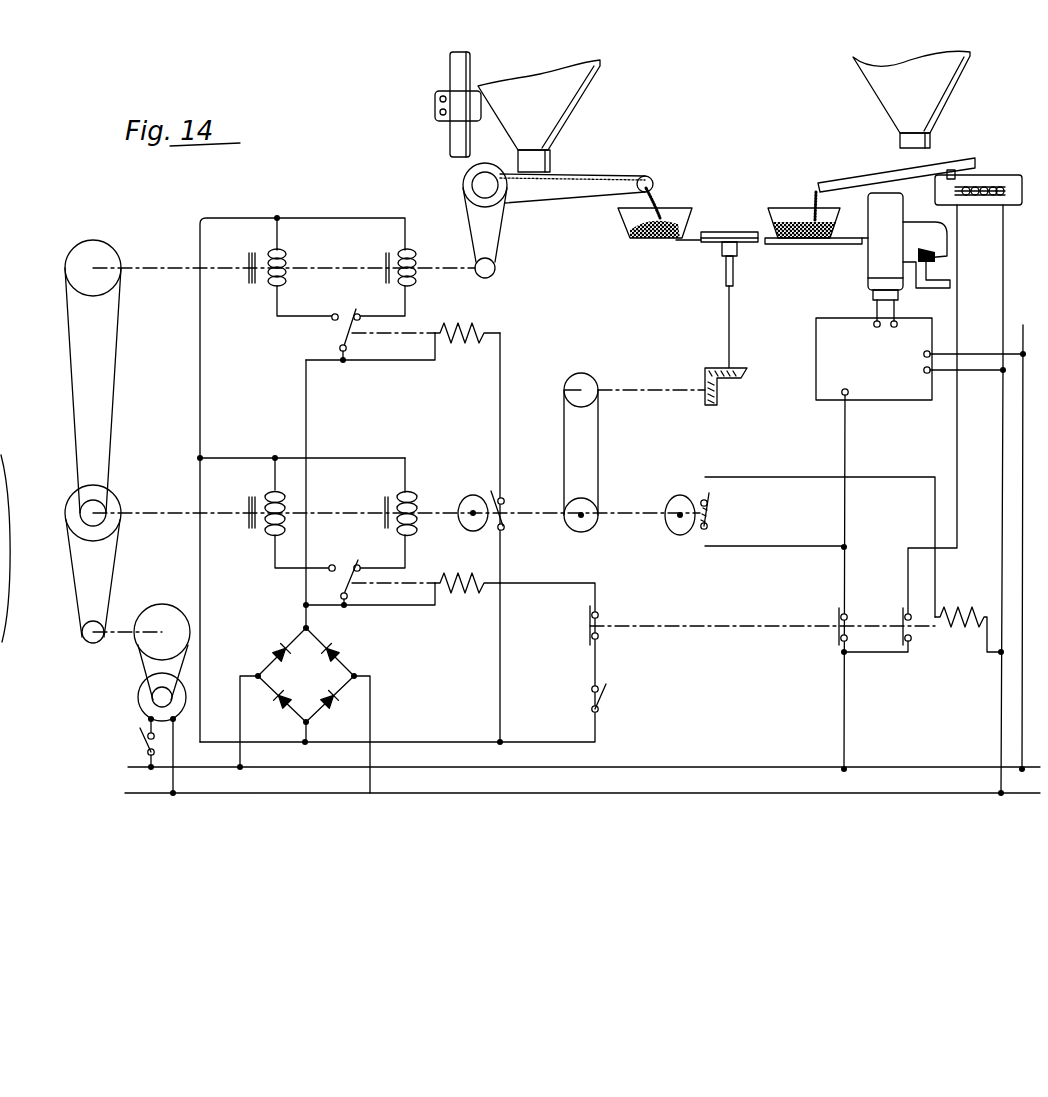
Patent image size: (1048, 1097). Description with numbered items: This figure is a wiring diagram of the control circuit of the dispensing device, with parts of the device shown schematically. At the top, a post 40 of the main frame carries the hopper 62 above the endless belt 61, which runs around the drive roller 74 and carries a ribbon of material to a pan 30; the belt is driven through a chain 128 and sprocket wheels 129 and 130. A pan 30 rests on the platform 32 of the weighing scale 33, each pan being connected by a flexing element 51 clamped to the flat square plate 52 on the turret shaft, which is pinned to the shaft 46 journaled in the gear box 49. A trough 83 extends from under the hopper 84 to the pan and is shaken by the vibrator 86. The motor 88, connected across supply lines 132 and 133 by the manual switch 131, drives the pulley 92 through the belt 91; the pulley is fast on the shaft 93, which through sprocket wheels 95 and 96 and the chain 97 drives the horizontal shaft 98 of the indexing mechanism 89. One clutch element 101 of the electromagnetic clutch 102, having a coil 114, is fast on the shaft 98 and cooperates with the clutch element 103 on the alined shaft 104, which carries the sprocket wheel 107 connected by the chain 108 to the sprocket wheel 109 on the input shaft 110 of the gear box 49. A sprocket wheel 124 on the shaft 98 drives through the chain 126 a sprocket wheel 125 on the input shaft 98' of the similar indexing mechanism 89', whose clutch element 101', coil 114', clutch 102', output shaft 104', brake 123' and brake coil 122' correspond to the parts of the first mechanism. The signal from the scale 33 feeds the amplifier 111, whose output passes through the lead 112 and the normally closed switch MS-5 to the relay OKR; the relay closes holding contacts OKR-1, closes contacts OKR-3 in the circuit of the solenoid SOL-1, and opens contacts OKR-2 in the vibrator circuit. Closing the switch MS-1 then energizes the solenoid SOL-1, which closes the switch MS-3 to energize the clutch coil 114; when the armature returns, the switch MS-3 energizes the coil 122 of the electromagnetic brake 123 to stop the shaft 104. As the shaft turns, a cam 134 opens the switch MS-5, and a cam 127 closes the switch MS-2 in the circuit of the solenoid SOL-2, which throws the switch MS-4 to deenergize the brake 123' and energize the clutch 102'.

The post 40 is at (455, 68).
The hopper 62 is at (570, 118).
The endless belt 61 is at (592, 200).
The sprocket wheel 130 is at (464, 183).
The drive roller 74 is at (485, 180).
The chain 128 is at (462, 215).
The sprocket wheel 129 is at (496, 269).
The receptacle 30 is at (622, 222).
The element 51 is at (690, 240).
The flat square plate 52 is at (712, 243).
The shaft 46 is at (726, 318).
The gear box 49 is at (748, 360).
The trough 83 is at (880, 172).
The hopper 84 is at (946, 112).
The vibrator 86 is at (1000, 176).
The platform 32 is at (816, 244).
The weighing scale 33 is at (878, 268).
The amplifier 111 is at (903, 400).
The lead 112 is at (844, 449).
The cam 134 is at (672, 500).
The sprocket wheel 109 is at (590, 382).
The sprocket wheel 107 is at (592, 530).
The chain 108 is at (600, 447).
The input shaft 110 is at (628, 388).
The sprocket wheel 125 is at (72, 268).
The chain 126 is at (68, 340).
The sprocket wheel 124 is at (80, 508).
The sprocket wheel 96 is at (78, 530).
The chain 97 is at (78, 598).
The sprocket wheel 95 is at (90, 642).
The shaft 93 is at (116, 630).
The pulley 92 is at (147, 648).
The motor 88 is at (152, 702).
The belt 91 is at (150, 680).
The manual switch 131 is at (144, 744).
The supply line 132 is at (132, 767).
The supply line 133 is at (172, 795).
The input shaft 98' is at (284, 253).
The indexing mechanism 89' is at (341, 248).
The clutch element 101' is at (233, 256).
The clutch coil 114' is at (297, 260).
The electromagnetic clutch 102' is at (244, 321).
The output shaft 104' is at (348, 255).
The electromagnetic brake 123' is at (395, 217).
The brake coil 122' is at (423, 259).
The horizontal shaft 98 is at (396, 502).
The indexing mechanism 89 is at (340, 498).
The clutch element 101 is at (233, 505).
The clutch element 103 is at (255, 526).
The clutch coil 114 is at (260, 499).
The electromagnetic clutch 102 is at (248, 565).
The shaft 104 is at (349, 499).
The electromagnetic brake 123 is at (381, 456).
The brake coil 122 is at (418, 493).
The cam 127 is at (463, 498).
The switch MS-1 is at (610, 700).
The switch MS-2 is at (506, 524).
The switch MS-3 is at (340, 562).
The switch MS-4 is at (342, 328).
The switch MS-5 is at (714, 518).
The solenoid SOL-1 is at (455, 600).
The solenoid SOL-2 is at (470, 338).
The relay OKR is at (952, 638).
The relay contacts OKR-1 is at (838, 640).
The relay contacts OKR-2 is at (905, 650).
The relay contacts OKR-3 is at (600, 634).